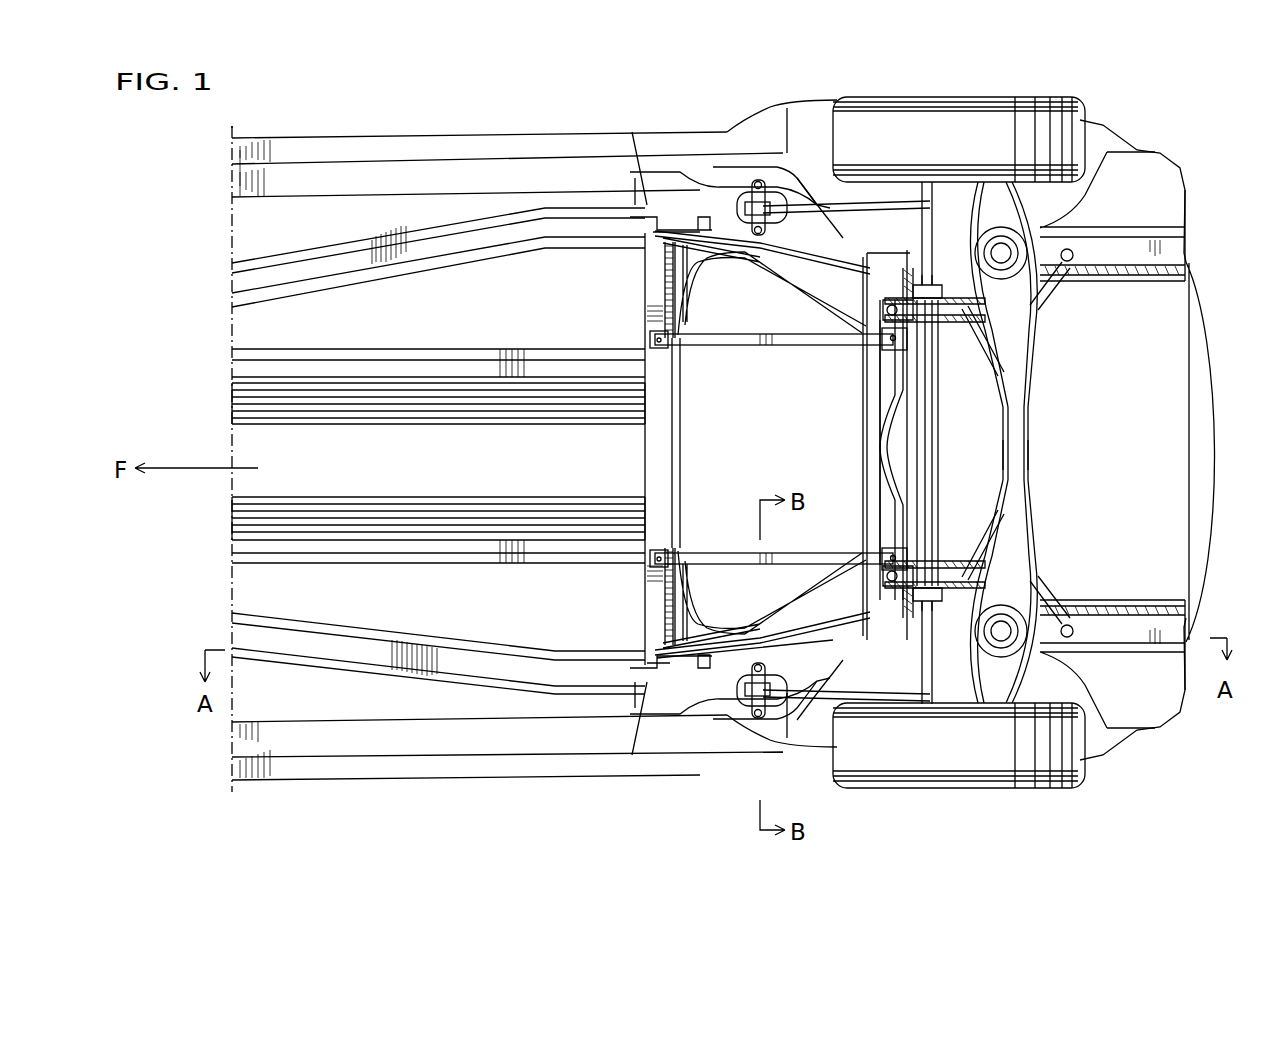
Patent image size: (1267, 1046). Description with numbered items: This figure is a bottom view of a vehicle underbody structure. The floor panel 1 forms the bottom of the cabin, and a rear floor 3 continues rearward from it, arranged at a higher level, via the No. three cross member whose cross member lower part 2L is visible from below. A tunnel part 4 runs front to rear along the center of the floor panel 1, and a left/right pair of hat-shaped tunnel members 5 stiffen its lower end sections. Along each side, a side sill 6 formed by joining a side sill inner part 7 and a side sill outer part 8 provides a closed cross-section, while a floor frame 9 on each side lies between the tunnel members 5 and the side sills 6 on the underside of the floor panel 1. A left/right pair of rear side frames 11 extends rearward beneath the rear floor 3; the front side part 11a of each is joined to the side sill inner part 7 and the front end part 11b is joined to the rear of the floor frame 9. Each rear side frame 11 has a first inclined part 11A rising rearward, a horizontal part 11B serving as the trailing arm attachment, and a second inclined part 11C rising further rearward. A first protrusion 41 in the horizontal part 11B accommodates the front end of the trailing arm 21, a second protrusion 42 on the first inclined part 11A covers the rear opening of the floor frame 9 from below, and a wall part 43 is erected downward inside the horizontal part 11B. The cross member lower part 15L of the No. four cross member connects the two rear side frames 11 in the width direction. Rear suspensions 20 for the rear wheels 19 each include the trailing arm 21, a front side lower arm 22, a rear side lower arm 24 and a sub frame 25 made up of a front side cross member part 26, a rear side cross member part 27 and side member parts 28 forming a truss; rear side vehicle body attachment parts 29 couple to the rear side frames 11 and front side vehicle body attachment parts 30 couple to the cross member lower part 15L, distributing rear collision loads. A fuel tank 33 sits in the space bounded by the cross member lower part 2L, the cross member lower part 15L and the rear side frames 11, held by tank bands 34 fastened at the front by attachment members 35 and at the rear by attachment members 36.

The floor panel 1 is at (432, 330).
The cross member lower part 2L is at (645, 450).
The rear floor 3 is at (1152, 474).
The tunnel part 4 is at (378, 474).
The tunnel member 5 is at (298, 362).
The side sill 6 is at (507, 134).
The side sill inner part 7 is at (381, 156).
The side sill outer part 8 is at (375, 108).
The floor frame 9 is at (478, 258).
The rear side frame 11 is at (1122, 235).
The front side part 11a is at (730, 128).
The front end part 11b is at (632, 236).
The first inclined part 11A is at (637, 160).
The horizontal part 11B is at (786, 108).
The second inclined part 11C is at (880, 195).
The cross member lower part 15L is at (880, 392).
The rear wheel 19 is at (982, 128).
The rear suspension 20 is at (1071, 412).
The trailing arm 21 is at (850, 195).
The front side lower arm 22 is at (930, 260).
The rear side lower arm 24 is at (1020, 206).
The sub frame 25 is at (1040, 384).
The front side cross member part 26 is at (940, 436).
The rear side cross member part 27 is at (1030, 464).
The side member part 28 is at (962, 322).
The rear side vehicle body attachment part 29 is at (1070, 268).
The front side vehicle body attachment part 30 is at (880, 312).
The fuel tank 33 is at (773, 452).
The tank band 34 is at (714, 346).
The attachment member 35 is at (648, 336).
The attachment member 36 is at (905, 340).
The first protrusion 41 is at (782, 195).
The second protrusion 42 is at (683, 205).
The wall part 43 is at (710, 262).